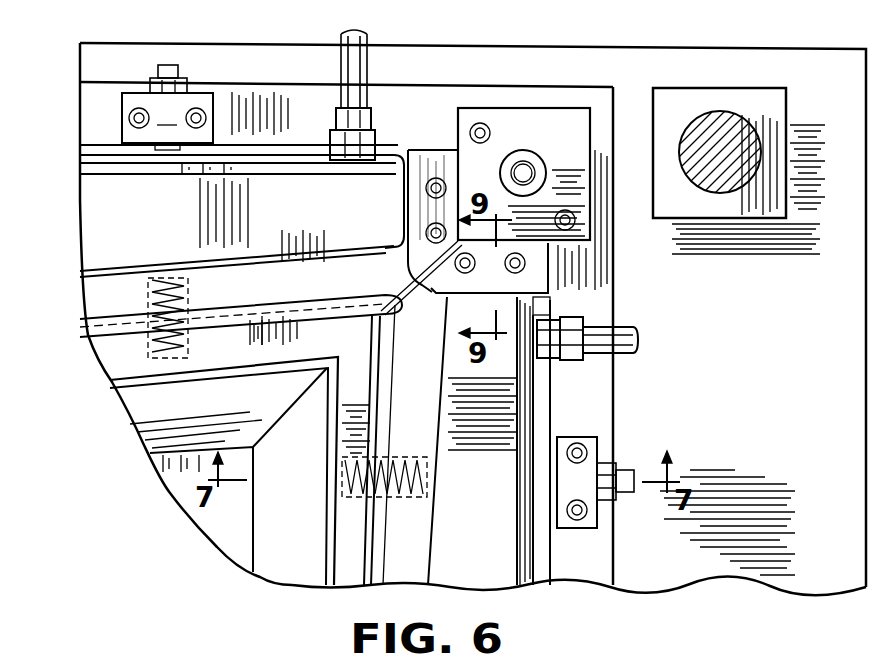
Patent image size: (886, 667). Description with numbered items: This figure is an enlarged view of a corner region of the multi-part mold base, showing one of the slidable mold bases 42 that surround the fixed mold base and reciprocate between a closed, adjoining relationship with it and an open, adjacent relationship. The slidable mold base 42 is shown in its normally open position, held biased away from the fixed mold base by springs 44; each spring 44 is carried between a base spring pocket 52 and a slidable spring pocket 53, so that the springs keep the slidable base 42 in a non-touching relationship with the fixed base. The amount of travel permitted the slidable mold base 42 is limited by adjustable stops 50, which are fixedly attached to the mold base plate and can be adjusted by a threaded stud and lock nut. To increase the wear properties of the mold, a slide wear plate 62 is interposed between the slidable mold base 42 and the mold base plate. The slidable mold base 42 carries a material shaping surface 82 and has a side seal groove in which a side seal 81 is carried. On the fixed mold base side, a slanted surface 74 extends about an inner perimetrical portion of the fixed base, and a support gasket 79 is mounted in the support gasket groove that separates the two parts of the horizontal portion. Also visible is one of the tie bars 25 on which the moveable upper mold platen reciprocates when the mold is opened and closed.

The tie bar 25 is at (723, 185).
The slidable mold base 42 is at (502, 567).
The spring 44 is at (157, 298).
The adjustable stop 50 is at (205, 85).
The base spring pocket 52 is at (143, 352).
The slidable spring pocket 53 is at (203, 288).
The slide wear plate 62 is at (521, 167).
The slanted surface 74 is at (165, 425).
The support gasket 79 is at (203, 375).
The side seal 81 is at (242, 290).
The material shaping surface 82 is at (322, 305).